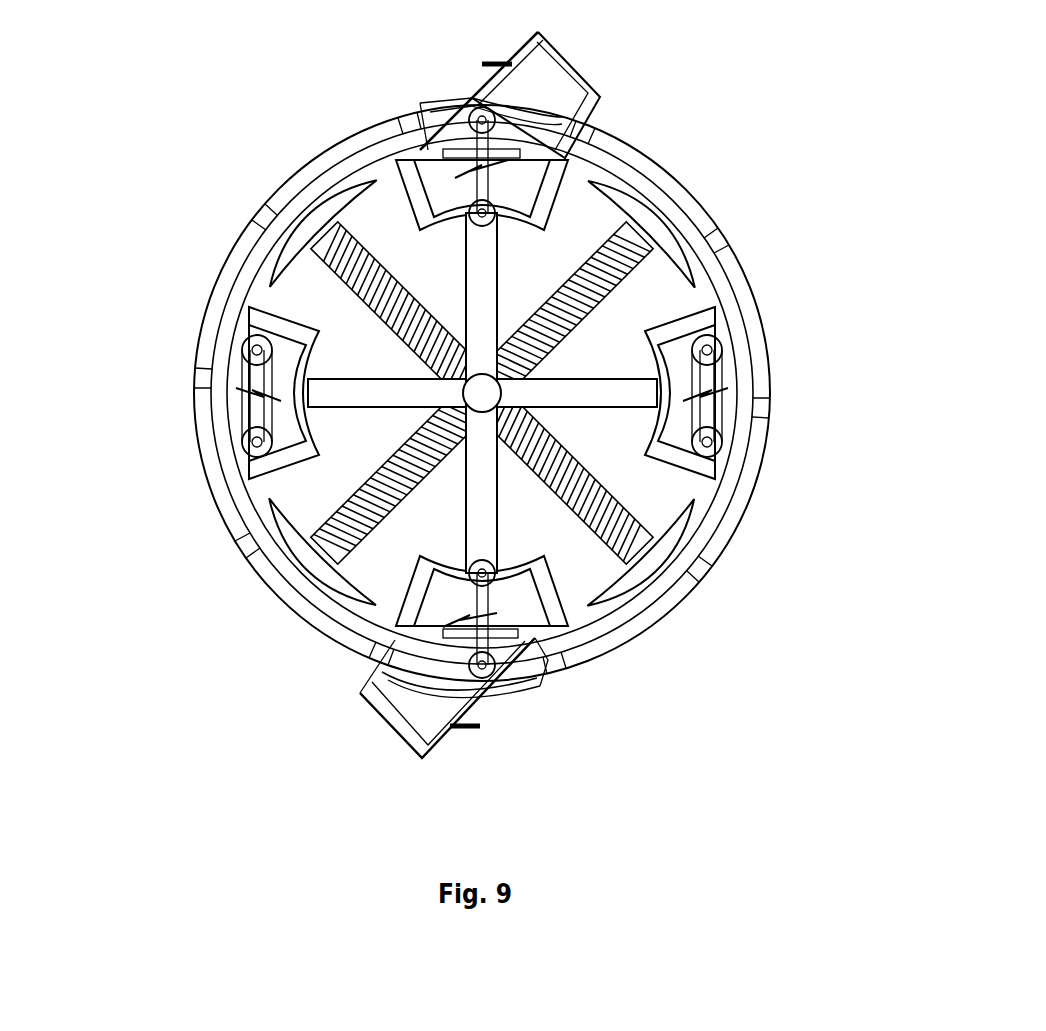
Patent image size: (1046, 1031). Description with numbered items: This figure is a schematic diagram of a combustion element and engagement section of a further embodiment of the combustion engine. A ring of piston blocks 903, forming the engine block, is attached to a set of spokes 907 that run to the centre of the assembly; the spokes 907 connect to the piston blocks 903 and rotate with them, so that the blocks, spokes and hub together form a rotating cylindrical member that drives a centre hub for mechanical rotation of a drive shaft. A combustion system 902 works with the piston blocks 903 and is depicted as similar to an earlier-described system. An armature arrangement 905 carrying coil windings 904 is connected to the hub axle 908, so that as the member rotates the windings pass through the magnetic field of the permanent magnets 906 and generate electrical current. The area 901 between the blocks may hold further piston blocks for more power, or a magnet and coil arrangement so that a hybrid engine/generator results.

The area 901 is at (257, 282).
The combustion system 902 is at (458, 82).
The piston block 903 is at (720, 315).
The coil windings 904 is at (662, 536).
The armature arrangement 905 is at (603, 516).
The permanent magnets 906 is at (198, 478).
The spokes 907 is at (482, 438).
The hub axle 908 is at (487, 396).